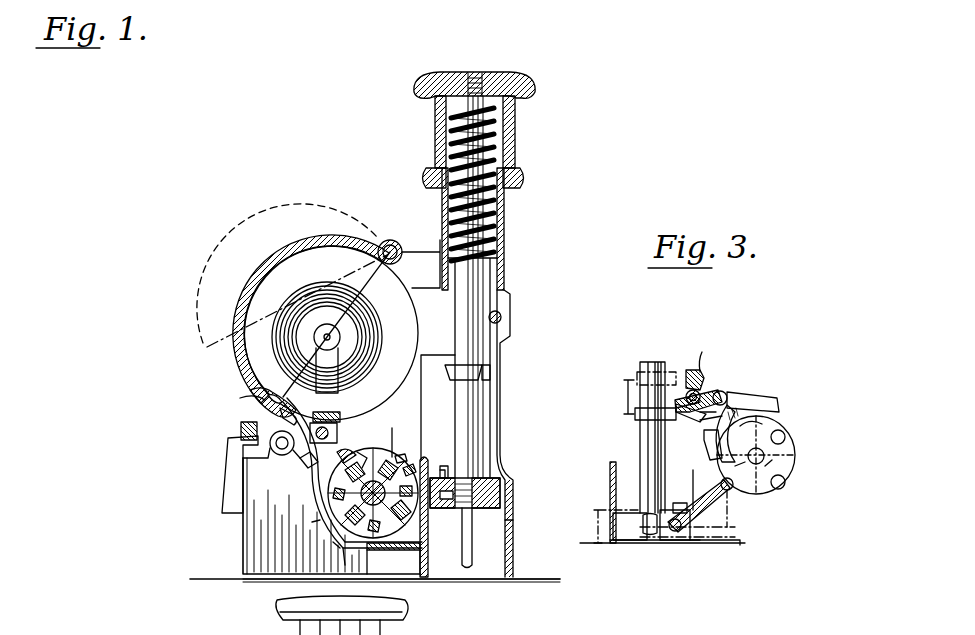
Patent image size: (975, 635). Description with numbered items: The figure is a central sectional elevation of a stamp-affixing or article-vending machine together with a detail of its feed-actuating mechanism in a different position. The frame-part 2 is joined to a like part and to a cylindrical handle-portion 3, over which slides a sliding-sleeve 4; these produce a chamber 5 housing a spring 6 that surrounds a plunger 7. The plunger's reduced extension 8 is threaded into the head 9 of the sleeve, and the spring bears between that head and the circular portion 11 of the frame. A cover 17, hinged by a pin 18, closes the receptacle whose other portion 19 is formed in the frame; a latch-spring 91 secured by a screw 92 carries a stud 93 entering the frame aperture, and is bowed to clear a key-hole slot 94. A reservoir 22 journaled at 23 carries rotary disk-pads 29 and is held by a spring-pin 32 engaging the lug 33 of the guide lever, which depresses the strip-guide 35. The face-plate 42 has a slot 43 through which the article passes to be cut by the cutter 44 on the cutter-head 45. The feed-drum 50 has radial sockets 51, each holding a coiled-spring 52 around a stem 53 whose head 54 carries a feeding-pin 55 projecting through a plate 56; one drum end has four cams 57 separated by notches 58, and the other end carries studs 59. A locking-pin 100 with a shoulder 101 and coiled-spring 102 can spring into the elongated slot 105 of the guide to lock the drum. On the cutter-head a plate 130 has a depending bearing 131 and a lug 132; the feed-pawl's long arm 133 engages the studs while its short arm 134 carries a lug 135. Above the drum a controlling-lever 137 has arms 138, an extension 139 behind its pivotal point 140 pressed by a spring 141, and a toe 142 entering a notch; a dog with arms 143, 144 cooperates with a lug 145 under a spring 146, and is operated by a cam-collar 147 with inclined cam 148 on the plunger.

In FIG. 1, the frame-part 2 is at (500, 430).
In FIG. 1, the cylindrical handle-portion 3 is at (505, 238).
In FIG. 1, the sliding-sleeve 4 is at (514, 152).
In FIG. 1, the chamber 5 is at (500, 131).
In FIG. 1, the spring 6 is at (488, 209).
In FIG. 1, the plunger 7 is at (480, 292).
In FIG. 3, the plunger 7 is at (645, 460).
In FIG. 1, the reduced extension 8 is at (484, 80).
In FIG. 1, the head 9 is at (534, 84).
In FIG. 1, the circular portion 11 is at (486, 273).
In FIG. 1, the cover 17 is at (287, 252).
In FIG. 1, the pin 18 is at (399, 224).
In FIG. 1, the receptacle portion 19 is at (420, 308).
In FIG. 1, the reservoir 22 is at (250, 548).
In FIG. 1, the journal pin 23 is at (271, 456).
In FIG. 1, the rotary disk-pads 29 is at (393, 558).
In FIG. 1, the spring-pin 32 is at (232, 443).
In FIG. 1, the lug 33 is at (241, 428).
In FIG. 1, the strip-guide 35 is at (303, 465).
In FIG. 1, the face-plate 42 is at (427, 569).
In FIG. 3, the face-plate 42 is at (700, 546).
In FIG. 1, the slot 43 is at (462, 528).
In FIG. 1, the cutter 44 is at (434, 501).
In FIG. 1, the cutter-head 45 is at (510, 514).
In FIG. 3, the cutter-head 45 is at (625, 541).
In FIG. 3, the feed-drum 50 is at (795, 468).
In FIG. 1, the radial socket 51 is at (350, 451).
In FIG. 1, the coiled-spring 52 is at (376, 493).
In FIG. 1, the stem 53 is at (397, 435).
In FIG. 1, the head 54 is at (412, 459).
In FIG. 1, the feeding-pin 55 is at (409, 444).
In FIG. 3, the plate 56 is at (742, 473).
In FIG. 3, the cam 57 is at (771, 469).
In FIG. 3, the notch 58 is at (754, 437).
In FIG. 3, the stud 59 is at (784, 434).
In FIG. 1, the latch-spring 91 is at (250, 380).
In FIG. 1, the screw 92 is at (235, 357).
In FIG. 1, the stud 93 is at (290, 420).
In FIG. 1, the key-hole slot 94 is at (250, 398).
In FIG. 1, the locking-pin 100 is at (332, 540).
In FIG. 1, the disk or shoulder 101 is at (334, 559).
In FIG. 1, the coiled-spring 102 is at (320, 505).
In FIG. 1, the elongated slot 105 is at (320, 522).
In FIG. 1, the plate 130 is at (488, 480).
In FIG. 3, the plate 130 is at (616, 508).
In FIG. 3, the depending bearing 131 is at (676, 543).
In FIG. 1, the lug 132 is at (452, 462).
In FIG. 3, the lug 132 is at (686, 491).
In FIG. 3, the long arm 133 is at (700, 513).
In FIG. 3, the short arm 134 is at (655, 540).
In FIG. 1, the lug 135 is at (447, 473).
In FIG. 3, the controlling-lever 137 is at (724, 396).
In FIG. 3, the arms 138 is at (779, 400).
In FIG. 3, the extension 139 is at (690, 372).
In FIG. 3, the pivotal point 140 is at (617, 440).
In FIG. 3, the spring 141 is at (702, 352).
In FIG. 3, the toe 142 is at (697, 451).
In FIG. 3, the arm 143 is at (690, 407).
In FIG. 3, the arm 144 is at (694, 433).
In FIG. 3, the lug 145 is at (700, 418).
In FIG. 3, the spring 146 is at (698, 390).
In FIG. 1, the cam-collar 147 is at (490, 375).
In FIG. 3, the cam-collar 147 is at (636, 378).
In FIG. 1, the inclined surface or cam 148 is at (450, 377).
In FIG. 3, the inclined surface or cam 148 is at (690, 417).